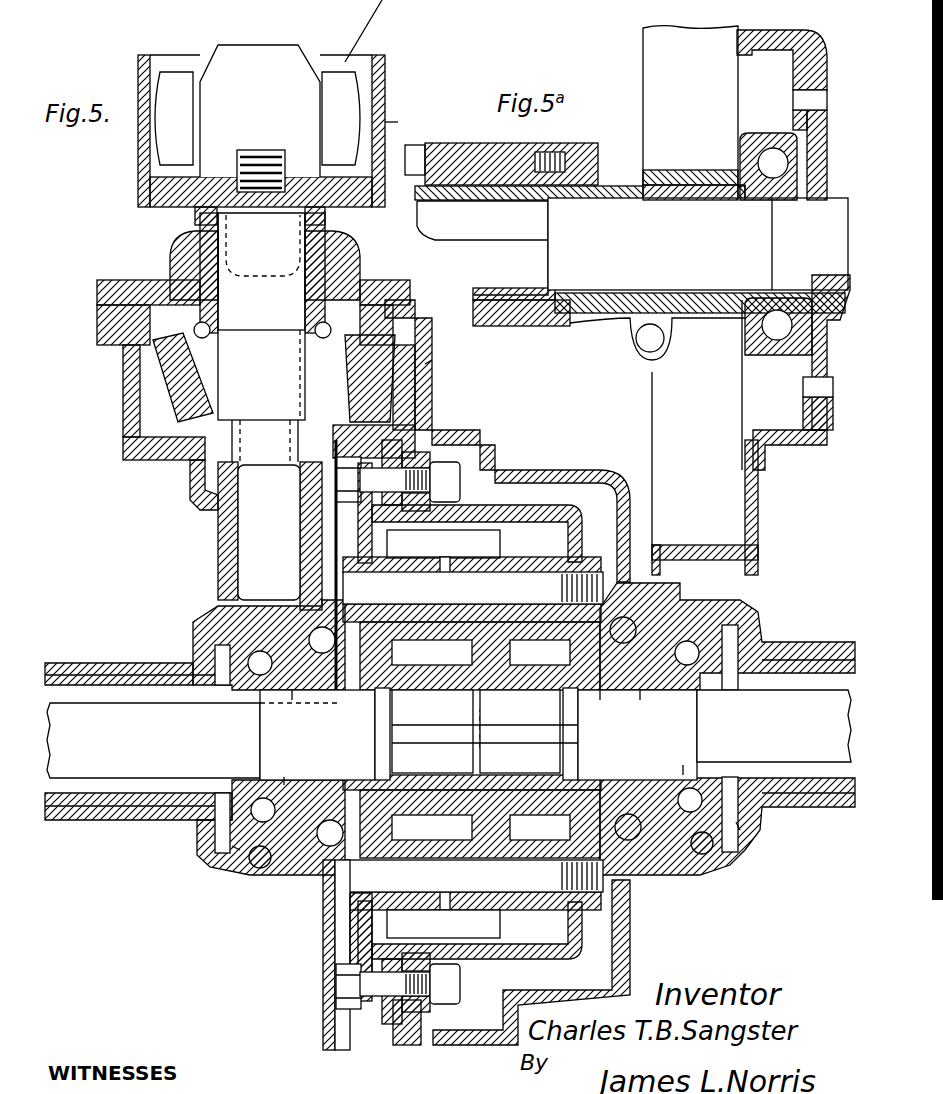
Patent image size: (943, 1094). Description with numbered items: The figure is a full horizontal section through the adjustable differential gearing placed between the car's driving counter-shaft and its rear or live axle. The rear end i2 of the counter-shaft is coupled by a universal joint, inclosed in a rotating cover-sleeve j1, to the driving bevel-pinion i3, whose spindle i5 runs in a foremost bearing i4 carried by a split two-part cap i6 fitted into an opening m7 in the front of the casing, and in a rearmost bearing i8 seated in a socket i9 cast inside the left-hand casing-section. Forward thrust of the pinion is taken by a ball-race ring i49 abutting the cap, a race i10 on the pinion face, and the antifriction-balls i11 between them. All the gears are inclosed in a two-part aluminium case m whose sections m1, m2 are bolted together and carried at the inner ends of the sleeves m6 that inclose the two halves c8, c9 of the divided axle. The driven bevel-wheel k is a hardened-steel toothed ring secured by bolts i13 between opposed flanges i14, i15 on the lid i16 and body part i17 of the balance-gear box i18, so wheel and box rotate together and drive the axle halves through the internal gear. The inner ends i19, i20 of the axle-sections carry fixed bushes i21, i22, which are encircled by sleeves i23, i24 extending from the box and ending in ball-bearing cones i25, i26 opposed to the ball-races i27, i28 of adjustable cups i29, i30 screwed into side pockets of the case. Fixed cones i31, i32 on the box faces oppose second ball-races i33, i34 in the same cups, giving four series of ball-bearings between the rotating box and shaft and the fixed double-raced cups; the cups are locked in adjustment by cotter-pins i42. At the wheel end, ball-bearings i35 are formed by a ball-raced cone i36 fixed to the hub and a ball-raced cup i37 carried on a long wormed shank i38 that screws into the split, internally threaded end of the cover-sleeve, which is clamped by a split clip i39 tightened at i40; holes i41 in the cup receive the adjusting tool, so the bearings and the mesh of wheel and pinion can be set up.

In FIG. 5, the counter-shaft end i2 is at (272, 50).
In FIG. 5, the bevel-pinion i3 is at (180, 393).
In FIG. 5, the foremost bearing i4 is at (342, 284).
In FIG. 5, the spindle i5 is at (261, 271).
In FIG. 5, the split cap i6 is at (116, 281).
In FIG. 5, the rearmost bearing i8 is at (230, 580).
In FIG. 5, the socket i9 is at (224, 520).
In FIG. 5, the race i10 is at (300, 352).
In FIG. 5, the antifriction-balls i11 is at (194, 331).
In FIG. 5, the bolts i13 is at (397, 475).
In FIG. 5, the flange i14 is at (364, 458).
In FIG. 5, the flange i15 is at (440, 470).
In FIG. 5, the lid i16 is at (366, 540).
In FIG. 5, the body part i17 is at (463, 542).
In FIG. 5, the balance-gear box i18 is at (591, 522).
In FIG. 5, the inner end of axle-section i19 is at (268, 735).
In FIG. 5, the inner end of axle-section i20 is at (637, 735).
In FIG. 5, the fixed bush i21 is at (292, 690).
In FIG. 5, the fixed bush i22 is at (627, 693).
In FIG. 5, the sleeve i23 is at (452, 734).
In FIG. 5, the sleeve i24 is at (594, 699).
In FIG. 5, the ball-bearing cone i25 is at (284, 777).
In FIG. 5, the ball-bearing cone i26 is at (683, 765).
In FIG. 5, the ball-race i27 is at (232, 846).
In FIG. 5, the ball-race i28 is at (736, 822).
In FIG. 5, the adjustable cup i29 is at (168, 838).
In FIG. 5, the adjustable cup i30 is at (792, 822).
In FIG. 5, the fixed cone i31 is at (261, 736).
In FIG. 5, the fixed cone i32 is at (326, 736).
In FIG. 5, the second ball-race i33 is at (439, 652).
In FIG. 5, the second ball-race i34 is at (678, 596).
In FIG. 5A, the ball-bearings i35 is at (775, 244).
In FIG. 5A, the ball-raced cone i36 is at (793, 250).
In FIG. 5A, the ball-raced cup i37 is at (761, 127).
In FIG. 5A, the wormed shank i38 is at (652, 200).
In FIG. 5A, the split clip i39 is at (687, 167).
In FIG. 5, the cotter-pin or nut and bolt i40 is at (666, 348).
In FIG. 5A, the holes or depressions i41 is at (738, 185).
In FIG. 5, the cotter-pins i42 is at (260, 870).
In FIG. 5, the ball-race ring i49 is at (192, 298).
In FIG. 5, the two-part case m is at (614, 457).
In FIG. 5, the casing-section m1 is at (216, 552).
In FIG. 5, the casing-section m2 is at (636, 530).
In FIG. 5, the sleeves m6 is at (72, 664).
In FIG. 5A, the sleeves m6 is at (580, 199).
In FIG. 5, the opening m7 is at (414, 306).
In FIG. 5, the bevel-wheel k is at (425, 364).
In FIG. 5, the axle half c8 is at (153, 740).
In FIG. 5, the axle half c9 is at (774, 726).
In FIG. 5A, the axle half c9 is at (482, 248).
In FIG. 5, the cover-sleeve j1 is at (400, 113).